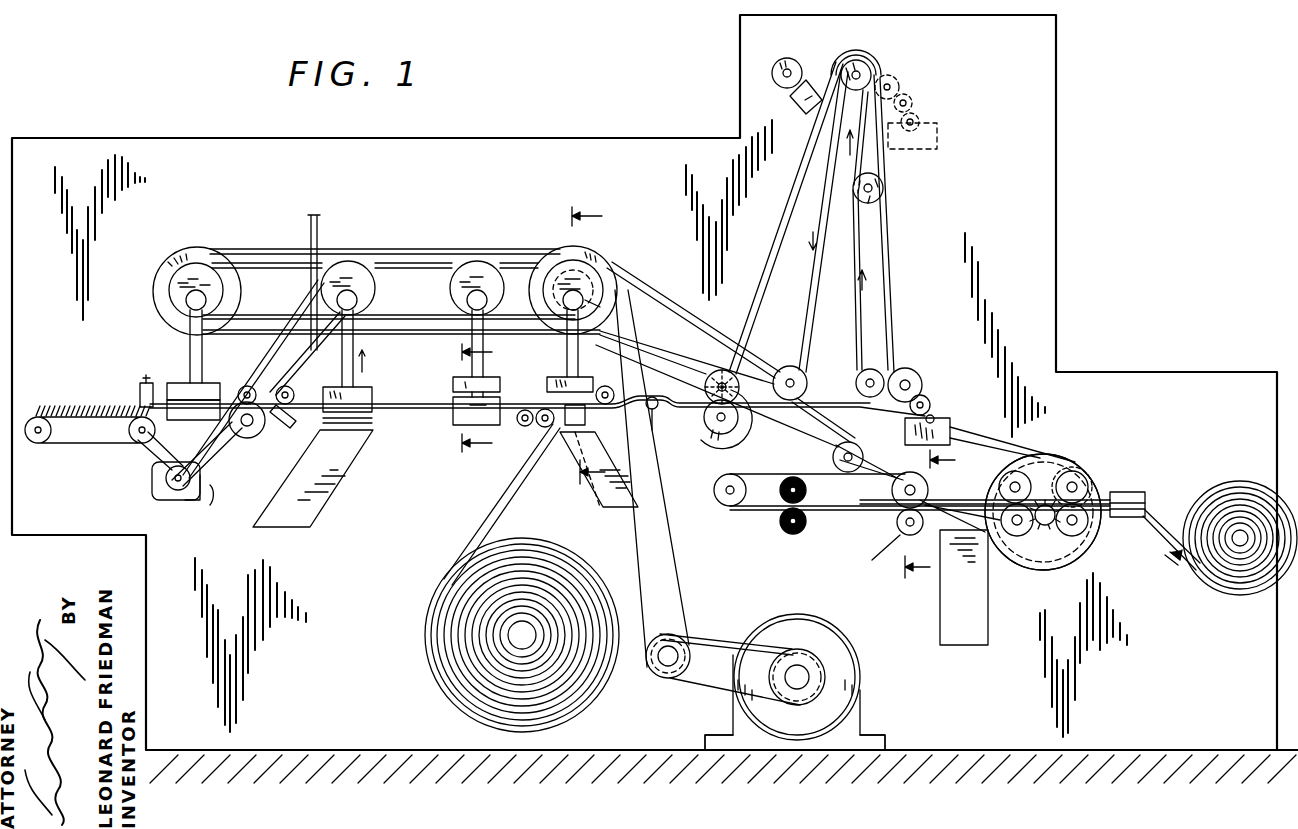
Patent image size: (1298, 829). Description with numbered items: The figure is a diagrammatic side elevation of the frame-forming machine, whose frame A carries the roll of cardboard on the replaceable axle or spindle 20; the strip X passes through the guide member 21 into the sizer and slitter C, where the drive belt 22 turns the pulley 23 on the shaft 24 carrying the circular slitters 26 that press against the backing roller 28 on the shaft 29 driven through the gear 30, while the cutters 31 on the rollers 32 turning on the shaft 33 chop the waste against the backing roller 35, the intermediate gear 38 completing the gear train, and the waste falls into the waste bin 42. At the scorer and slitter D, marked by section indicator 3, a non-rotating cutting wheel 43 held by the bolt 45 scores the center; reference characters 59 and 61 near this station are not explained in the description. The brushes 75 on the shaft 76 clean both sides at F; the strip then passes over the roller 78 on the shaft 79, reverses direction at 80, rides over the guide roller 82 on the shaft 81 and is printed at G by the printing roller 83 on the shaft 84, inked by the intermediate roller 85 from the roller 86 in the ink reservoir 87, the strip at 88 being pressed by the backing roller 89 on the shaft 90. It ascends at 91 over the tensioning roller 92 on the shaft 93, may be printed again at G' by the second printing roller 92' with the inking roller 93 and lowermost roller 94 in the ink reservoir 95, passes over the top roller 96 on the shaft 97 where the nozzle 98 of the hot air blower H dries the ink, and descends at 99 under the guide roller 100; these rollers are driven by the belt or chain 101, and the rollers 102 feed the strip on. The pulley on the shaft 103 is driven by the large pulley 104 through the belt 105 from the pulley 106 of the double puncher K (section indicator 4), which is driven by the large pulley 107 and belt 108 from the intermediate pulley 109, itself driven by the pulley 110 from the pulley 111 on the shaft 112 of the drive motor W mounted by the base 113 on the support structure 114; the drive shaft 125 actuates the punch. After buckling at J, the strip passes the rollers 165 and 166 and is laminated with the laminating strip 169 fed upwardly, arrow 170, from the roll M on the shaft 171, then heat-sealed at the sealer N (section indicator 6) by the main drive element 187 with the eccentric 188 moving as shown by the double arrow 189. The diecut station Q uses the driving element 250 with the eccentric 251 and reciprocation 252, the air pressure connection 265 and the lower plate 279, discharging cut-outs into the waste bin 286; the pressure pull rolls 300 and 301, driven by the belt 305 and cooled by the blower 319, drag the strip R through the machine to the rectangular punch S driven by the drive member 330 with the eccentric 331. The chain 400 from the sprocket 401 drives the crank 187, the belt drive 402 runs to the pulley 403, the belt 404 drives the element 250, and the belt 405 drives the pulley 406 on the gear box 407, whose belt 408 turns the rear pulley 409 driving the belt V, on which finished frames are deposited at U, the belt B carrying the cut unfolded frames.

The frame A is at (1048, 233).
The axle or spindle 20 is at (1240, 545).
The guide member 21 is at (1135, 490).
The drive belt 22 is at (1010, 452).
The pulley 23 is at (1040, 568).
The shaft 24 is at (1080, 480).
The circular slitters 26 is at (1076, 470).
The backing roller 28 is at (1072, 528).
The shaft 29 is at (1082, 530).
The gear 30 is at (975, 508).
The cutters 31 is at (1008, 450).
The rollers 32 is at (1003, 480).
The shaft 33 is at (1005, 476).
The backing roller 35 is at (1015, 526).
The intermediate gear 38 is at (1032, 478).
The waste bin 42 is at (966, 645).
The non-rotating cutting wheel 43 is at (904, 478).
The bolt 45 is at (931, 478).
The idler roller 59 is at (923, 523).
The support arm 61 is at (885, 557).
The brushes 75 is at (830, 511).
The shaft 76 is at (795, 536).
The roller 78 is at (730, 506).
The shaft 79 is at (714, 492).
The direction reversal 80 is at (812, 461).
The shaft 81 is at (846, 448).
The guide roller 82 is at (852, 472).
The printing roller 83 is at (906, 366).
The shaft 84 is at (912, 382).
The intermediate roller 85 is at (932, 400).
The roller 86 is at (938, 420).
The ink reservoir 87 is at (905, 436).
The printing position 88 is at (895, 368).
The backing roller 89 is at (862, 372).
The shaft 90 is at (808, 383).
The ascending run 91 is at (870, 295).
The tensioning roller 92 is at (892, 186).
The second printing roller 92' is at (895, 71).
The shaft 93 is at (872, 192).
The lowermost roller 94 is at (905, 130).
The ink reservoir 95 is at (938, 132).
The top roller 96 is at (855, 62).
The shaft 97 is at (851, 124).
The nozzle 98 is at (794, 92).
The downward run 99 is at (815, 236).
The guide roller 100 is at (788, 375).
The belt or chain 101 is at (870, 240).
The rollers 102 is at (708, 420).
The shaft 103 is at (738, 430).
The large pulley or sprocket 104 is at (724, 437).
The belt or chain 105 is at (657, 337).
The pulley or sprocket 106 is at (590, 264).
The large pulley or sprocket 107 is at (580, 252).
The belt or chain 108 is at (673, 572).
The intermediate pulley or sprocket 109 is at (658, 680).
The pulley 110 is at (703, 636).
The pulley 111 is at (820, 660).
The shaft 112 is at (800, 689).
The base 113 is at (878, 750).
The floor or support structure 114 is at (808, 752).
The drive shaft 125 is at (562, 302).
The roller 165 is at (534, 428).
The roller 166 is at (534, 404).
The laminating strip 169 is at (530, 445).
The arrow 170 is at (515, 494).
The shaft 171 is at (532, 630).
The main drive element 187 is at (475, 268).
The eccentric 188 is at (468, 305).
The double arrow 189 is at (455, 395).
The driving element 250 is at (370, 284).
The eccentric 251 is at (356, 302).
The reciprocation 252 is at (387, 354).
The air pressure connection 265 is at (317, 230).
The lower plate 279 is at (372, 422).
The waste bin 286 is at (325, 498).
The pressure pull roll 300 is at (258, 388).
The pressure pull roll 301 is at (246, 440).
The belt 305 is at (280, 408).
The blower 319 is at (302, 435).
The drive member 330 is at (200, 262).
The eccentric 331 is at (196, 300).
The chain 400 is at (503, 268).
The sprocket 401 is at (596, 287).
The belt drive 402 is at (400, 255).
The pulley 403 is at (180, 255).
The chain or belt 404 is at (266, 266).
The belt or chain 405 is at (210, 505).
The pulley or sprocket 406 is at (180, 490).
The gear box 407 is at (160, 494).
The belt or sprocket 408 is at (160, 465).
The rear pulley 409 is at (145, 440).
The section line 3 is at (938, 518).
The section line 4 is at (599, 355).
The section line 6 is at (488, 400).
The belt B is at (1248, 492).
The sizer and slitter C is at (1100, 477).
The scorer and slitter D is at (893, 524).
The brushing station F is at (784, 546).
The printer G is at (935, 382).
The second printer G' is at (926, 86).
The hot air blower H is at (800, 58).
The buckling position J is at (648, 435).
The double puncher K is at (596, 410).
The roll of laminating strip M is at (440, 688).
The sealer N is at (455, 446).
The diecut station Q is at (370, 394).
The strip R is at (668, 306).
The rectangular punch S is at (218, 381).
The deposit position U is at (94, 394).
The belt V is at (57, 450).
The drive motor W is at (815, 625).
The strip X is at (1157, 540).